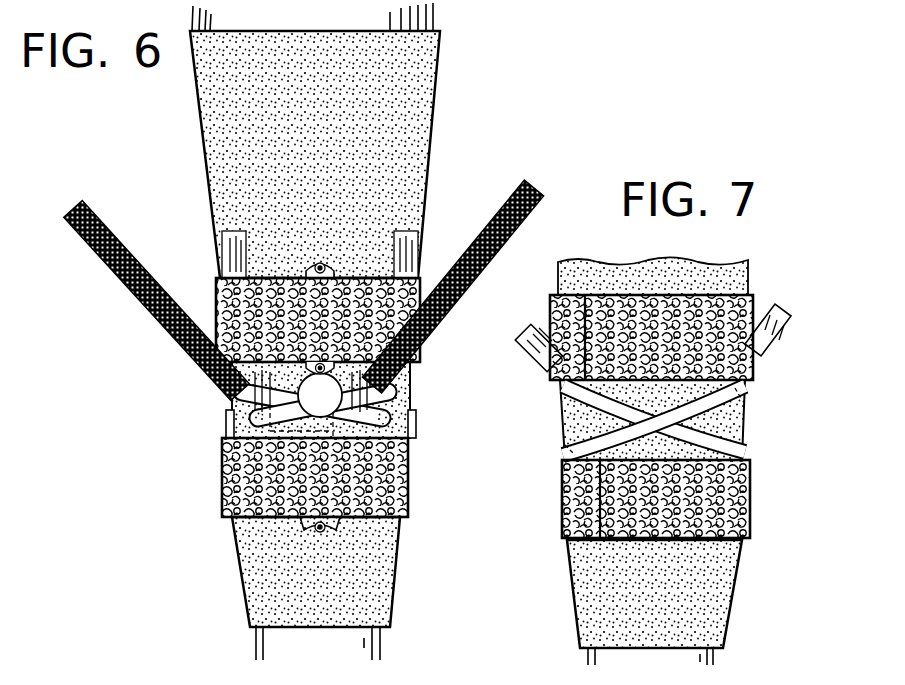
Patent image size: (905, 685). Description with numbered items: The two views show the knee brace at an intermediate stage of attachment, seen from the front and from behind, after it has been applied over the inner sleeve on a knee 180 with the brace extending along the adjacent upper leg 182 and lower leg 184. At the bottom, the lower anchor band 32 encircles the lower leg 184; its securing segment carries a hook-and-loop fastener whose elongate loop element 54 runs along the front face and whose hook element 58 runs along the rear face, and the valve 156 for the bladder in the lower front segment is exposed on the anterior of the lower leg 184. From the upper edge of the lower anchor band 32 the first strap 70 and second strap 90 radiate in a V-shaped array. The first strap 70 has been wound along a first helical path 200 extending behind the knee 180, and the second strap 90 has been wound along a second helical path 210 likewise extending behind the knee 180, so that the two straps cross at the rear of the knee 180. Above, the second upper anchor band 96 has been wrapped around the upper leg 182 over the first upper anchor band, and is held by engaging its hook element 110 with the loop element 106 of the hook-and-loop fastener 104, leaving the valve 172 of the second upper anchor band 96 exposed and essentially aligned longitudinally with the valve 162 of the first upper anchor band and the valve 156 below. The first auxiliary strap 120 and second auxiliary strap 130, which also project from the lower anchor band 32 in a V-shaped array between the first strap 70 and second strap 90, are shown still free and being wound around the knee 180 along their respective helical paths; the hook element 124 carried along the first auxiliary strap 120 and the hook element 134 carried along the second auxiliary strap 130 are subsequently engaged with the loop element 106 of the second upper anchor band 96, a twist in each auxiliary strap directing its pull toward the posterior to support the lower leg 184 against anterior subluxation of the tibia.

In FIG. 6, the upper leg 182 is at (435, 12).
In FIG. 6, the valve 162 is at (304, 260).
In FIG. 6, the second auxiliary strap 130 is at (432, 214).
In FIG. 6, the first auxiliary strap 120 is at (210, 230).
In FIG. 6, the hook element 124 is at (126, 277).
In FIG. 6, the hook element 134 is at (460, 306).
In FIG. 6, the knee 180 is at (224, 385).
In FIG. 6, the valve 172 is at (248, 426).
In FIG. 6, the valve 156 is at (302, 532).
In FIG. 6, the lower leg 184 is at (255, 651).
In FIG. 7, the hook-and-loop fastener 104 is at (587, 298).
In FIG. 7, the hook element 110 is at (613, 297).
In FIG. 7, the second upper anchor band 96 is at (750, 295).
In FIG. 7, the loop element 106 is at (556, 317).
In FIG. 7, the second strap 90 is at (748, 392).
In FIG. 7, the first helical path 200 is at (566, 403).
In FIG. 7, the second helical path 210 is at (566, 413).
In FIG. 7, the first strap 70 is at (646, 423).
In FIG. 7, the loop element 54 is at (562, 491).
In FIG. 7, the hook element 58 is at (562, 528).
In FIG. 7, the lower anchor band 32 is at (744, 540).